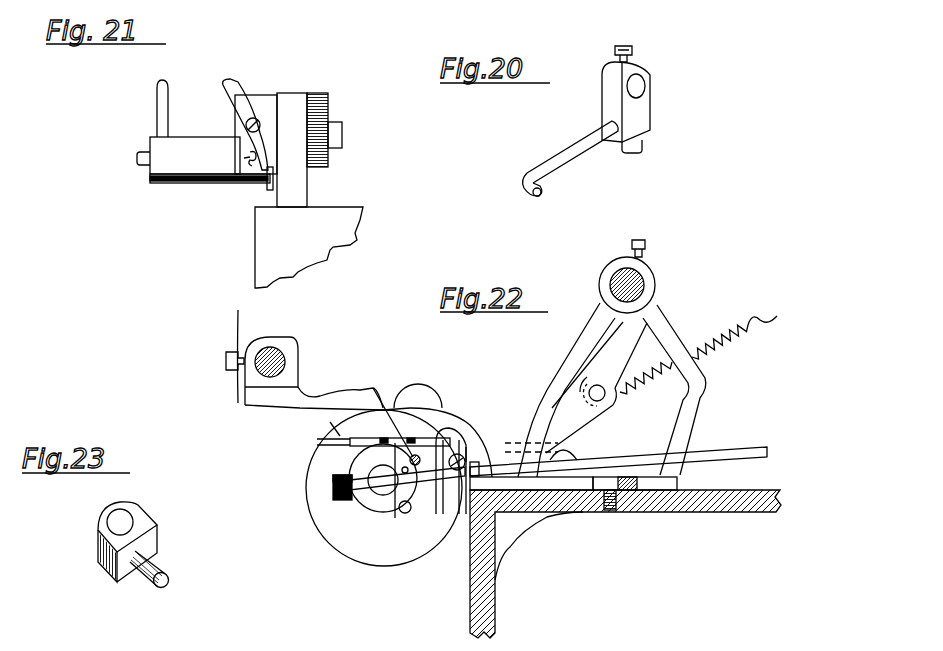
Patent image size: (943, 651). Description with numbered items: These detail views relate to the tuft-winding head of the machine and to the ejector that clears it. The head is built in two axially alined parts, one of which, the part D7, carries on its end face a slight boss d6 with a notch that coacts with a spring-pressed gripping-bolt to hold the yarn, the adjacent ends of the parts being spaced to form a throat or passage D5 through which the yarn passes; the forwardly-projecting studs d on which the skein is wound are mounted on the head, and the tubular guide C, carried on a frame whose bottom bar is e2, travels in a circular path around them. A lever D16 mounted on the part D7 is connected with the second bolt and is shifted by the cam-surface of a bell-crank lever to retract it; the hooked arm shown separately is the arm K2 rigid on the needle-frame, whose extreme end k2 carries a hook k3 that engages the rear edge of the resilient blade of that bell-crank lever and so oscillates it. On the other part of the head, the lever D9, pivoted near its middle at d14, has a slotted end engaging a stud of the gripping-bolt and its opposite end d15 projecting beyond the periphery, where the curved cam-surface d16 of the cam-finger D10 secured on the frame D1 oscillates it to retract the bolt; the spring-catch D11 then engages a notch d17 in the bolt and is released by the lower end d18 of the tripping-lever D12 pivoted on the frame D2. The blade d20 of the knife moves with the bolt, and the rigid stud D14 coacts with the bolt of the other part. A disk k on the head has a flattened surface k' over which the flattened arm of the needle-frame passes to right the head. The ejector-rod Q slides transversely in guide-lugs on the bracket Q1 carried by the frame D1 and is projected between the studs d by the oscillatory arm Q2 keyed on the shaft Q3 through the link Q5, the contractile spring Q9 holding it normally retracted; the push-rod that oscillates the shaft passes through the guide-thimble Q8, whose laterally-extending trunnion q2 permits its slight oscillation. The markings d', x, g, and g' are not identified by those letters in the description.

In FIG. 21, the studs d is at (175, 101).
In FIG. 21, the head part D7 is at (165, 163).
In FIG. 21, the boss d6 is at (123, 168).
In FIG. 21, the spring-catch D11 is at (276, 187).
In FIG. 22, the spring-catch D11 is at (441, 527).
In FIG. 21, the lever D16 is at (241, 88).
In FIG. 21, the frame D2 is at (292, 99).
In FIG. 21, the throat or passage D5 is at (336, 84).
In FIG. 20, the arm K2 is at (548, 156).
In FIG. 20, the extreme end of arm k2 is at (545, 193).
In FIG. 20, the hook k3 is at (527, 191).
In FIG. 22, the bottom bar e2 is at (292, 352).
In FIG. 22, the tubular guide C is at (318, 403).
In FIG. 22, the flattened surface k' is at (323, 423).
In FIG. 22, the disk k is at (382, 498).
In FIG. 22, the lever D9 is at (350, 443).
In FIG. 22, the rod d' is at (517, 478).
In FIG. 22, the notch d17 is at (370, 460).
In FIG. 22, the lever end d15 is at (350, 442).
In FIG. 22, the axis x is at (333, 496).
In FIG. 22, the knife blade d20 is at (400, 512).
In FIG. 22, the rigid stud D14 is at (408, 512).
In FIG. 22, the cam-surface d16 is at (419, 466).
In FIG. 22, the pivot d14 is at (362, 420).
In FIG. 22, the tripping-lever D12 is at (428, 401).
In FIG. 22, the cam-finger D10 is at (484, 429).
In FIG. 22, the pivot g' is at (538, 430).
In FIG. 22, the shaft Q3 is at (644, 283).
In FIG. 22, the link Q5 is at (562, 427).
In FIG. 22, the oscillatory arm Q2 is at (607, 350).
In FIG. 22, the bracket Q1 is at (706, 398).
In FIG. 22, the coiled contractile spring Q9 is at (716, 331).
In FIG. 22, the ejector-rod Q is at (628, 454).
In FIG. 22, the plate g is at (592, 489).
In FIG. 22, the frame D1 is at (657, 515).
In FIG. 22, the lower end of tripping-lever d18 is at (482, 534).
In FIG. 23, the guide-thimble Q8 is at (133, 512).
In FIG. 23, the trunnion q2 is at (162, 569).